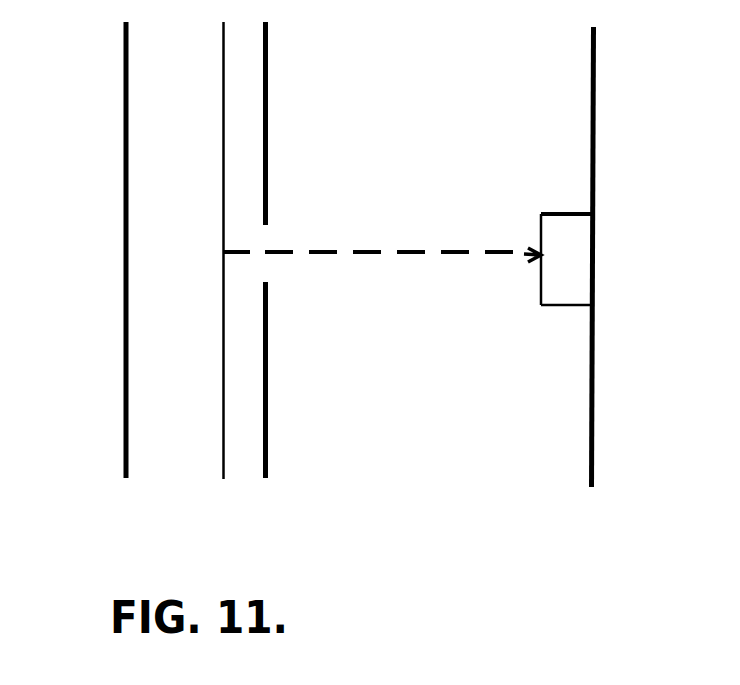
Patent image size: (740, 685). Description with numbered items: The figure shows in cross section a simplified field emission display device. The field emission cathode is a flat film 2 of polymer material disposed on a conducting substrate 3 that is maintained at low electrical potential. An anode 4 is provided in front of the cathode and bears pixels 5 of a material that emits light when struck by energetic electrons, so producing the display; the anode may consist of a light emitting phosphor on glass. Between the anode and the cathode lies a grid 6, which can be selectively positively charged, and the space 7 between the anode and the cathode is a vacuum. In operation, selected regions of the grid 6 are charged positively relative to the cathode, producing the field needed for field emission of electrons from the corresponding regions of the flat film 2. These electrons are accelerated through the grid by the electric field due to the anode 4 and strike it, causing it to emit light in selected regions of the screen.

The flat film of polymer material 2 is at (186, 232).
The conducting substrate 3 is at (124, 465).
The anode 4 is at (592, 467).
The pixels 5 is at (543, 307).
The grid 6 is at (266, 453).
The space 7 is at (428, 128).